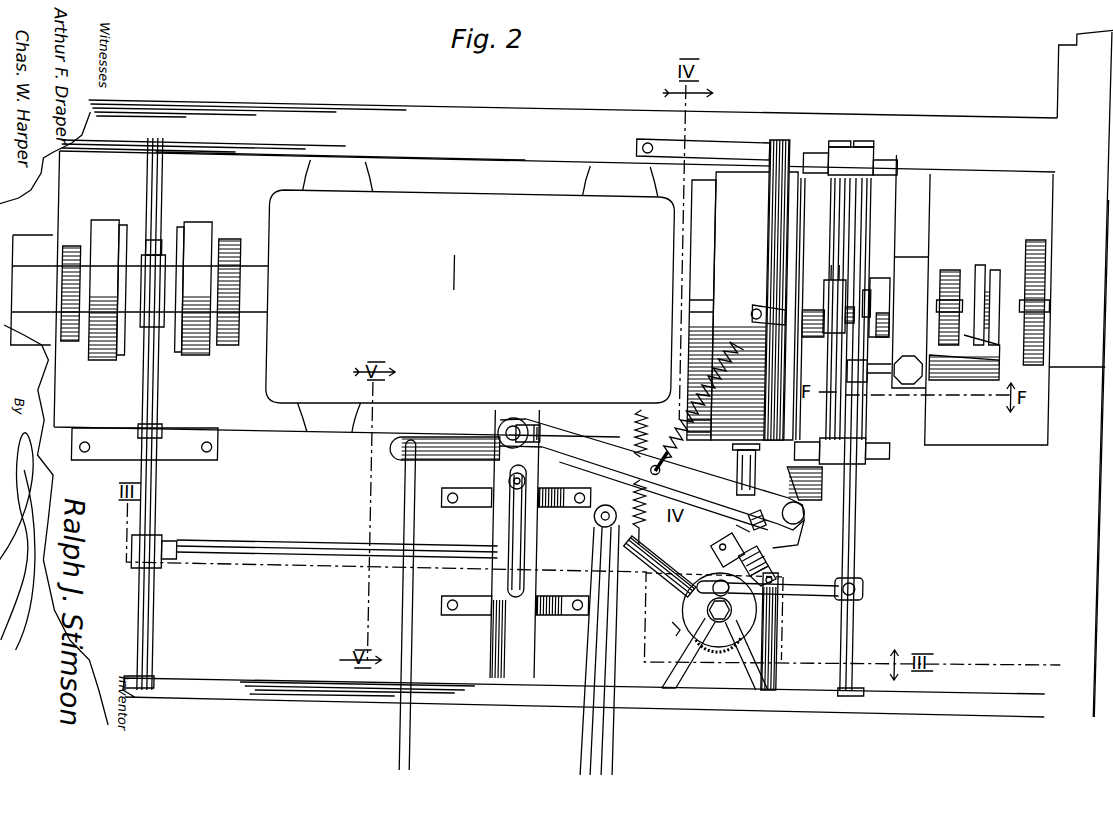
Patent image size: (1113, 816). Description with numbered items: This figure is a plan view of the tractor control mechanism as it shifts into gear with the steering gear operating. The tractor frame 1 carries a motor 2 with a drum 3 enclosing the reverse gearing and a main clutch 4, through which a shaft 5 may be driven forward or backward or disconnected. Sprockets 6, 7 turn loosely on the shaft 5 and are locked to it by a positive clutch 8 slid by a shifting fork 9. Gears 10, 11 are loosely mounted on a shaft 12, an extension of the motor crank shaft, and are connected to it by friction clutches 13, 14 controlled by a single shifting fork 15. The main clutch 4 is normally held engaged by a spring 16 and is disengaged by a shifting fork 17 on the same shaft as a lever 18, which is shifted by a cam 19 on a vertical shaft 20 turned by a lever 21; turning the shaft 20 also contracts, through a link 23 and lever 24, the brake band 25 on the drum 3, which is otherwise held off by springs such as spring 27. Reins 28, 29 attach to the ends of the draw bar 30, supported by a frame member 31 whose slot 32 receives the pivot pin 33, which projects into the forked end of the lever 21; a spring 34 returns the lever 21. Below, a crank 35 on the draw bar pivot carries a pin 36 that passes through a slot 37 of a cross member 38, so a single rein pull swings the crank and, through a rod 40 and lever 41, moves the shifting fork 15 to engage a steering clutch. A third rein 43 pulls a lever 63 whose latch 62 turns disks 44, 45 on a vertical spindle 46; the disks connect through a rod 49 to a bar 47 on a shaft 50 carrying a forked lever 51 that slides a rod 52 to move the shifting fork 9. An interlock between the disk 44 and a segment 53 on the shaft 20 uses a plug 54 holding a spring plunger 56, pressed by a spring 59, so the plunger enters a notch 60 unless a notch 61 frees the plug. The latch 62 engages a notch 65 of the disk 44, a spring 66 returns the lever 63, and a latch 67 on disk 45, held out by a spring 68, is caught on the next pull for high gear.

The tractor frame 1 is at (401, 88).
The motor 2 is at (474, 200).
The drum 3 is at (687, 232).
The main clutch 4 is at (796, 215).
The shaft 5 is at (1103, 330).
The sprocket 6 is at (946, 270).
The sprocket 7 is at (1026, 258).
The positive clutch 8 is at (972, 285).
The shifting fork 9 is at (988, 380).
The gear 10 is at (67, 244).
The gear 11 is at (230, 239).
The shaft 12 is at (243, 290).
The friction clutch 13 is at (100, 220).
The friction clutch 14 is at (197, 222).
The shifting fork 15 is at (148, 318).
The spring 16 is at (876, 282).
The shifting fork 17 is at (826, 268).
The lever 18 is at (860, 483).
The cam 19 is at (858, 508).
The vertical shaft 20 is at (808, 512).
The lever 21 is at (630, 452).
The link 23 is at (738, 470).
The lever 24 is at (740, 452).
The brake band 25 is at (734, 160).
The spring 27 is at (750, 305).
The rein 28 is at (405, 633).
The rein 29 is at (622, 740).
The draw bar 30 is at (429, 460).
The frame member 31 is at (495, 664).
The slot 32 is at (540, 537).
The pivot pin 33 is at (500, 430).
The spring 34 is at (676, 372).
The crank 35 is at (510, 478).
The pin 36 is at (527, 480).
The slot 37 is at (510, 585).
The cross member 38 is at (507, 517).
The rod 40 is at (282, 542).
The lever 41 is at (159, 537).
The rein 43 is at (590, 740).
The disk 44 is at (778, 645).
The disk 45 is at (692, 603).
The vertical spindle 46 is at (727, 640).
The bar 47 is at (866, 596).
The rod 49 is at (814, 596).
The shaft 50 is at (860, 530).
The forked lever 51 is at (862, 385).
The rod 52 is at (946, 380).
The segment 53 is at (750, 516).
The plug 54 is at (772, 555).
The spring plunger 56 is at (716, 548).
The spring 59 is at (780, 575).
The notch 60 is at (714, 580).
The notch 61 is at (738, 528).
The latch 62 is at (700, 588).
The lever 63 is at (662, 555).
The notch 65 is at (678, 618).
The spring 66 is at (645, 416).
The latch 67 is at (678, 630).
The spring 68 is at (706, 652).